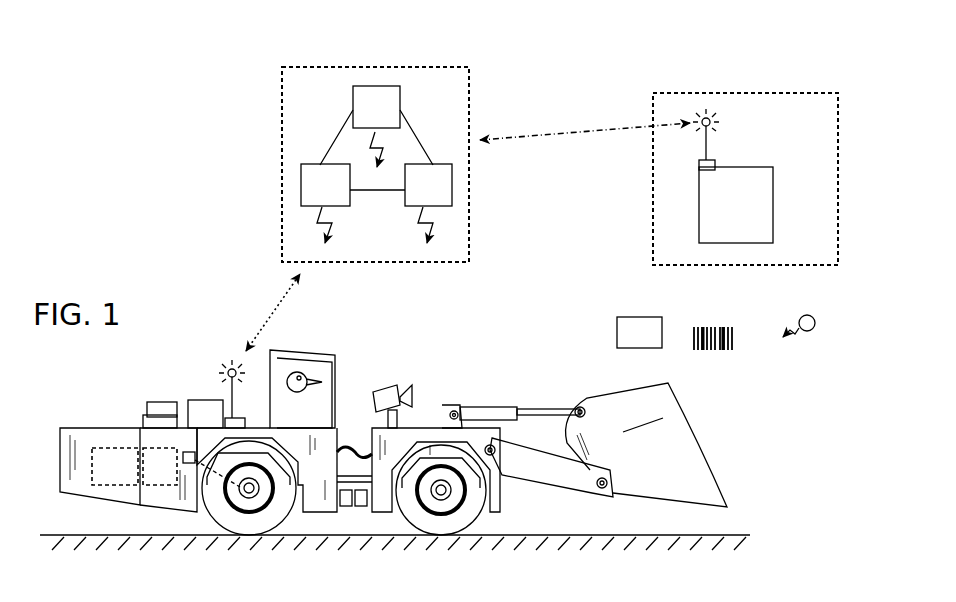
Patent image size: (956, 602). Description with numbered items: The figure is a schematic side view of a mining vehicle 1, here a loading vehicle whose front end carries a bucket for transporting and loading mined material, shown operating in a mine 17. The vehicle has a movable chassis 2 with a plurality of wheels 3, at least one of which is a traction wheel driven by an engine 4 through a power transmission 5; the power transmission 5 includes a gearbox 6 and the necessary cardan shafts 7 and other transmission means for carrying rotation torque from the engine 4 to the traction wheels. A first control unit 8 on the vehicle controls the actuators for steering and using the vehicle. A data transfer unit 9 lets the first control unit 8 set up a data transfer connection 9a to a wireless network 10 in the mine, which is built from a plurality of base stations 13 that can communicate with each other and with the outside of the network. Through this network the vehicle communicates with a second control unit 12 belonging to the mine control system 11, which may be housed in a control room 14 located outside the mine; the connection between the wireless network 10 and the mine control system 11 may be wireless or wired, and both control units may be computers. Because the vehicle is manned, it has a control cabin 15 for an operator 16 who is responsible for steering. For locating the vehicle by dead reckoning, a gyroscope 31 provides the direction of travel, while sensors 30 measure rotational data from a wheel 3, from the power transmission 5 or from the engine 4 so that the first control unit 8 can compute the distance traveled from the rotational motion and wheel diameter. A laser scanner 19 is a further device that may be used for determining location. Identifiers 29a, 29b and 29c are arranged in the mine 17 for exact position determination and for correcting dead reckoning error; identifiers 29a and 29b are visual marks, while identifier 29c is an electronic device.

The mining vehicle 1 is at (526, 320).
The movable chassis 2 is at (320, 500).
The wheels 3 is at (257, 522).
The engine 4 is at (120, 481).
The power transmission 5 is at (158, 493).
The gearbox 6 is at (166, 481).
The cardan shafts 7 is at (222, 482).
The first control unit 8 is at (213, 410).
The data transfer unit 9 is at (229, 364).
The data transfer connection 9a is at (270, 313).
The wireless network 10 is at (305, 67).
The mine control system 11 is at (736, 130).
The second control unit 12 is at (752, 216).
The base stations 13 is at (392, 119).
The control room 14 is at (802, 93).
The control cabin 15 is at (297, 353).
The operator 16 is at (322, 382).
The mine 17 is at (155, 236).
The laser scanner 19 is at (407, 390).
The identifier 29a is at (633, 325).
The identifier 29b is at (718, 345).
The identifier 29c is at (816, 333).
The sensors 30 is at (185, 458).
The gyroscope 31 is at (165, 405).